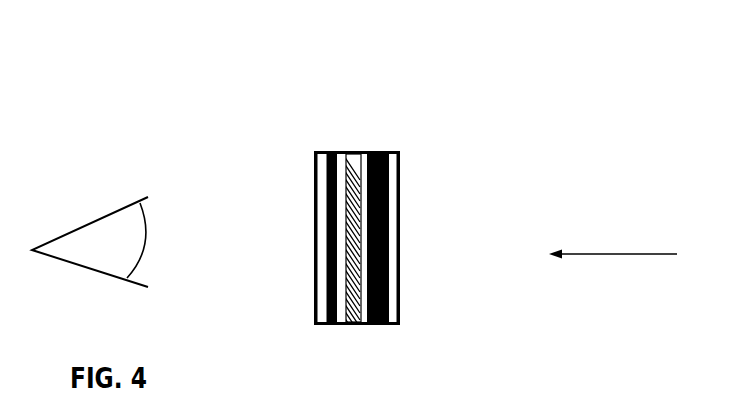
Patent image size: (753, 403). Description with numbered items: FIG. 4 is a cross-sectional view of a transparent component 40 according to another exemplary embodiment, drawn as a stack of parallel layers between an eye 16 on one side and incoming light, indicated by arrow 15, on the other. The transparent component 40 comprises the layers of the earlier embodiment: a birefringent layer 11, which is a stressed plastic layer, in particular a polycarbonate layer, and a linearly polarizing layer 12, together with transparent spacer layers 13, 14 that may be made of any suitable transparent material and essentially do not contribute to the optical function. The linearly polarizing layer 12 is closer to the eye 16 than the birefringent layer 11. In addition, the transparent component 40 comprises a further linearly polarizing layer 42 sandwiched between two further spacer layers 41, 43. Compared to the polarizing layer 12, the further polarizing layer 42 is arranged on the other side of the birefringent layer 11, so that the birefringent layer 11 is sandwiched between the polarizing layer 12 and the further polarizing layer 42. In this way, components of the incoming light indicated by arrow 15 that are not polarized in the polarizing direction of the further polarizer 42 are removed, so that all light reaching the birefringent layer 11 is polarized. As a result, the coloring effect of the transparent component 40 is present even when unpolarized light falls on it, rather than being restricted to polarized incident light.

The transparent component 40 is at (362, 202).
The birefringent layer 11 is at (353, 285).
The linearly polarizing layer 12 is at (325, 282).
The transparent spacer layer 13 is at (318, 211).
The transparent spacer layer 14 is at (338, 184).
The further spacer layer 41 is at (372, 193).
The further linearly polarizing layer 42 is at (377, 323).
The further spacer layer 43 is at (394, 253).
The arrow 15 is at (623, 254).
The eye 16 is at (82, 223).